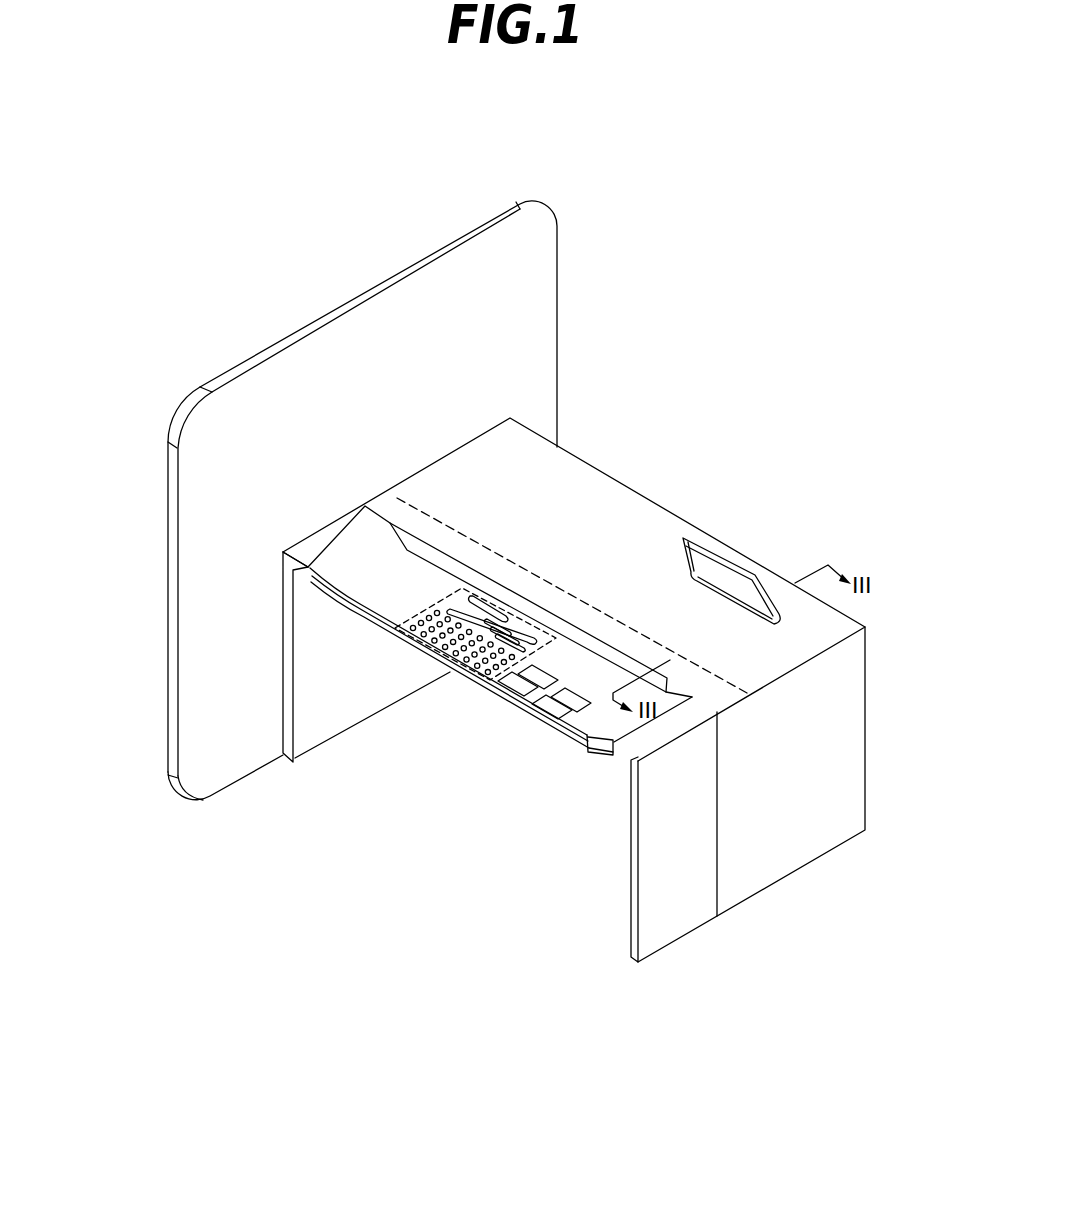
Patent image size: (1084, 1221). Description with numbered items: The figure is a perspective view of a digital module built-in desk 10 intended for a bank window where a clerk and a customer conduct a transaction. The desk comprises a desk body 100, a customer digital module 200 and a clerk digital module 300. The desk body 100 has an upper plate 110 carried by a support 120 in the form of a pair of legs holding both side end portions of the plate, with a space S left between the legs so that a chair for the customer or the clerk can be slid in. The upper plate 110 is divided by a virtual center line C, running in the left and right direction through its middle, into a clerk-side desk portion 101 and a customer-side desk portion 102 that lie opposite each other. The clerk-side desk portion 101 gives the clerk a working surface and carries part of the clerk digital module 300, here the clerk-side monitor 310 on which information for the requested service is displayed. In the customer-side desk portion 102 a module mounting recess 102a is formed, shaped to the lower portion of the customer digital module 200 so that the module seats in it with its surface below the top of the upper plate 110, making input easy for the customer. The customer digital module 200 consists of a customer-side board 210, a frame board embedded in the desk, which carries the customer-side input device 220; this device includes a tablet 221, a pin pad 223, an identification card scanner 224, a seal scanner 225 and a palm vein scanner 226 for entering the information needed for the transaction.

The digital module built-in desk 10 is at (558, 149).
The desk body 100 is at (574, 745).
The clerk-side desk portion 101 is at (733, 667).
The customer-side desk portion 102 is at (680, 722).
The module mounting recess 102a is at (332, 553).
The upper plate 110 is at (574, 717).
The support 120 is at (840, 1021).
The customer digital module 200 is at (468, 717).
The customer-side board 210 is at (598, 746).
The customer-side input device 220 is at (418, 731).
The tablet 221 is at (385, 647).
The pin pad 223 is at (518, 674).
The identification card scanner 224 is at (560, 693).
The seal scanner 225 is at (527, 690).
The palm vein scanner 226 is at (523, 757).
The clerk digital module 300 is at (774, 561).
The clerk-side monitor 310 is at (727, 577).
The center line C is at (692, 667).
The space S is at (608, 835).